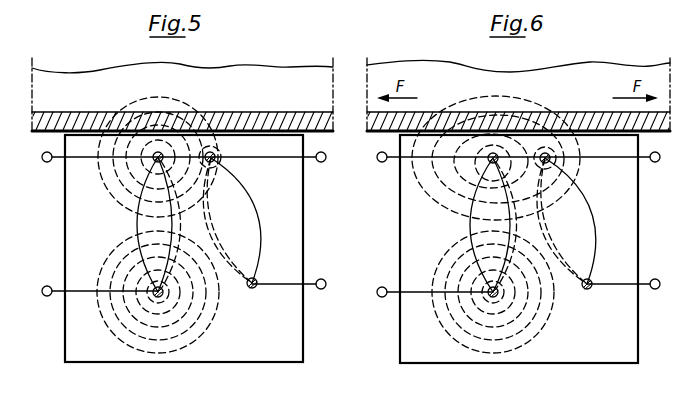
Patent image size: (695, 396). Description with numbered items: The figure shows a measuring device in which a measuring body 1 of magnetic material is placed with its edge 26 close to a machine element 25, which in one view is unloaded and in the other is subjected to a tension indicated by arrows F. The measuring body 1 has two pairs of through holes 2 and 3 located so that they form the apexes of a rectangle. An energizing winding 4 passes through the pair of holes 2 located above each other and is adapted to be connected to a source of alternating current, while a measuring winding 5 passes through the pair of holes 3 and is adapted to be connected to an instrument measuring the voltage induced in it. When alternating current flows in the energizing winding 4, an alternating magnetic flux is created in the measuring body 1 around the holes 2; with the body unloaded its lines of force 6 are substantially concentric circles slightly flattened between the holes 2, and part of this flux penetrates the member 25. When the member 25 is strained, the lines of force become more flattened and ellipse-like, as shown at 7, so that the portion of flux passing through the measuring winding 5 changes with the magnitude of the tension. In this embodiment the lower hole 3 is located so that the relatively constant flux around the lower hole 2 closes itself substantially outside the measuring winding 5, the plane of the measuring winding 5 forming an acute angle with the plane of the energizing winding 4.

In FIG. 5, the measuring body 1 is at (303, 342).
In FIG. 6, the measuring body 1 is at (400, 336).
In FIG. 5, the holes for the energizing winding 2 is at (160, 153).
In FIG. 6, the holes for the energizing winding 2 is at (495, 155).
In FIG. 5, the holes for the measuring winding 3 is at (215, 158).
In FIG. 6, the holes for the measuring winding 3 is at (550, 158).
In FIG. 5, the energizing winding 4 is at (137, 222).
In FIG. 6, the energizing winding 4 is at (470, 228).
In FIG. 5, the measuring winding 5 is at (253, 219).
In FIG. 6, the measuring winding 5 is at (591, 218).
In FIG. 5, the lines of force 6 is at (110, 252).
In FIG. 6, the deformed lines of force 7 is at (432, 200).
In FIG. 5, the machine element 25 is at (258, 98).
In FIG. 6, the machine element 25 is at (604, 95).
In FIG. 5, the edge of the measuring body 26 is at (282, 137).
In FIG. 6, the edge of the measuring body 26 is at (380, 138).